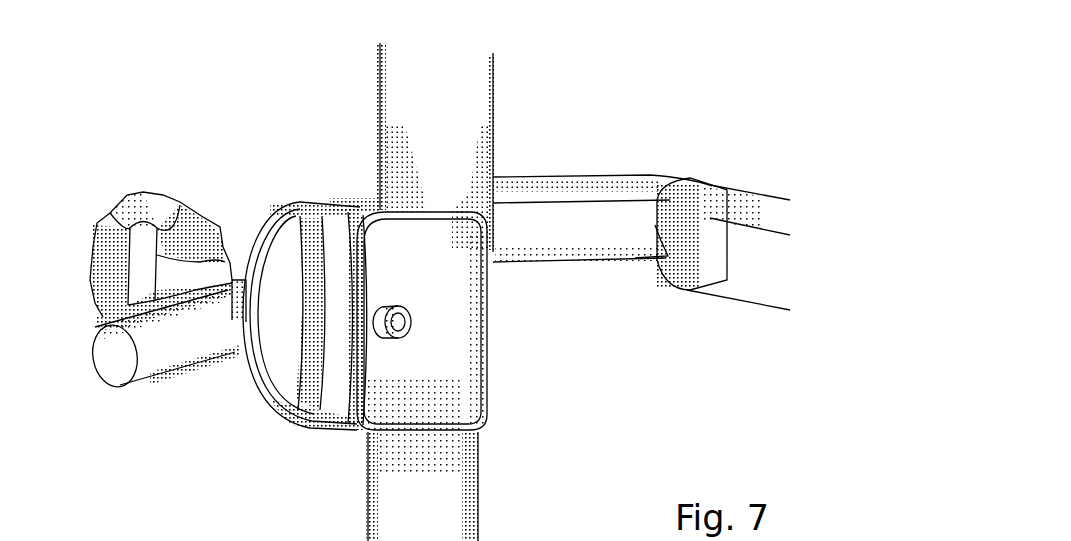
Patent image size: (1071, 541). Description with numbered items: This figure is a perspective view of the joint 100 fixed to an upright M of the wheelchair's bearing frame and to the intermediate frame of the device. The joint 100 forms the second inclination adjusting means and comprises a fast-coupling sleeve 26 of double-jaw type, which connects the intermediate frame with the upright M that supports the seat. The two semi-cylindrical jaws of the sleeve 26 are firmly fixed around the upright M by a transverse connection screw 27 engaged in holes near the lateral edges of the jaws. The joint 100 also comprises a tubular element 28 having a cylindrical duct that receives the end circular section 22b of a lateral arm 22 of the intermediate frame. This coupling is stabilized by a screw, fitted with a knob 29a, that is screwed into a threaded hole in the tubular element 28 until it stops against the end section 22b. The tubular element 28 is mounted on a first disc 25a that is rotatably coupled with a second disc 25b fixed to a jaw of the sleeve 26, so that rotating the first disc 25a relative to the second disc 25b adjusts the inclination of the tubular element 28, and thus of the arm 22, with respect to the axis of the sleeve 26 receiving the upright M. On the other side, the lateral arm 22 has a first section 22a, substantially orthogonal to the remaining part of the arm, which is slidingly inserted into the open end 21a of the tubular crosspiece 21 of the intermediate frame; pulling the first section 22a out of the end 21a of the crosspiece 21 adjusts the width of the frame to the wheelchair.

The joint 100 is at (366, 241).
The knob 29a is at (152, 207).
The first disc 25a is at (258, 240).
The second disc 25b is at (302, 217).
The end circular section 22b is at (172, 352).
The tubular element 28 is at (237, 283).
The fast-coupling sleeve 26 is at (470, 312).
The transverse connection screw 27 is at (397, 330).
The lateral arm 22 is at (578, 193).
The first section 22a is at (657, 240).
The open end 21a is at (723, 188).
The crosspiece 21 is at (758, 272).
The upright M is at (443, 473).